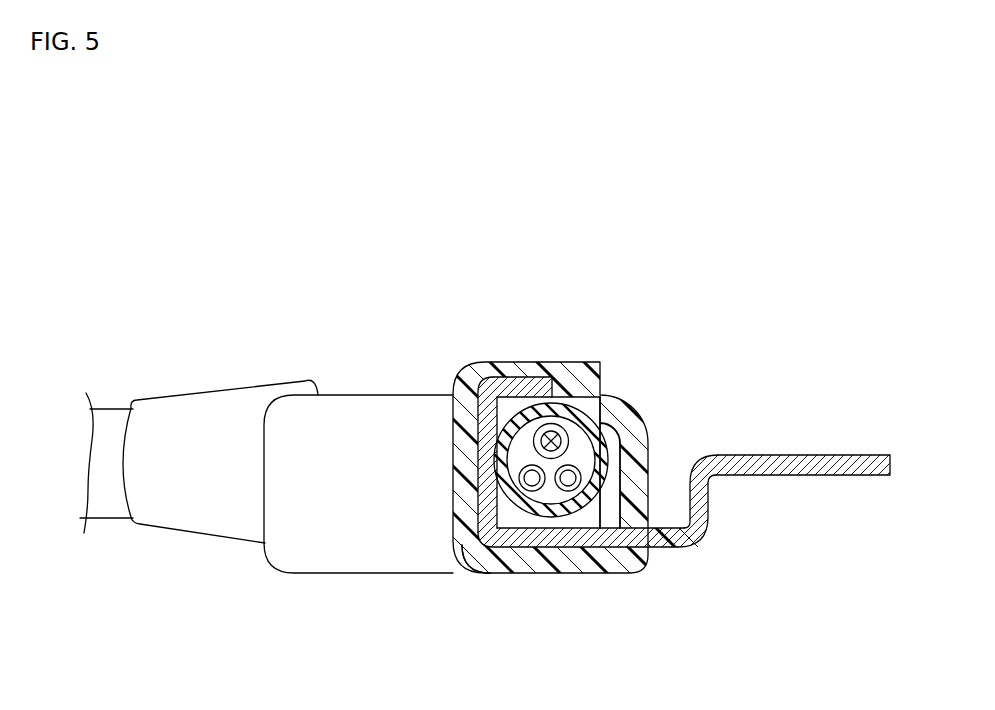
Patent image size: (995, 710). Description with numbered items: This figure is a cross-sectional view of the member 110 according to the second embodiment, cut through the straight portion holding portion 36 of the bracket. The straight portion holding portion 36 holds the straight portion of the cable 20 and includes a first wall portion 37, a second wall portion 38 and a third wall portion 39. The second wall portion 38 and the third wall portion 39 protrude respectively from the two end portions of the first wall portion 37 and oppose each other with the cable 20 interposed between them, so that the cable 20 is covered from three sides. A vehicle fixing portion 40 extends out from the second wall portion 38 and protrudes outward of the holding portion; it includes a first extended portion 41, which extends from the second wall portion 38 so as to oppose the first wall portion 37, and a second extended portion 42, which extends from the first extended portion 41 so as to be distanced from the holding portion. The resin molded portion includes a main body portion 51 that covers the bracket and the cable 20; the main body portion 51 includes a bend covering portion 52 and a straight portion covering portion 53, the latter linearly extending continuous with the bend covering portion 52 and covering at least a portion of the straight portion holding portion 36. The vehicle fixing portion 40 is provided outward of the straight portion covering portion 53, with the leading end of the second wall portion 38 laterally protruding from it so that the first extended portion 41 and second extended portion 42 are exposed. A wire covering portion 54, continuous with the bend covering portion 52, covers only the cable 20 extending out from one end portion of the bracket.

The member 110 is at (371, 244).
The cable 20 is at (108, 500).
The straight portion holding portion 36 is at (523, 380).
The first wall portion 37 is at (480, 464).
The second wall portion 38 is at (653, 538).
The third wall portion 39 is at (540, 390).
The vehicle fixing portion 40 is at (626, 461).
The first extended portion 41 is at (702, 505).
The second extended portion 42 is at (805, 455).
The main body portion 51 is at (492, 588).
The bend covering portion 52 is at (418, 563).
The straight portion covering portion 53 is at (396, 533).
The wire covering portion 54 is at (190, 513).